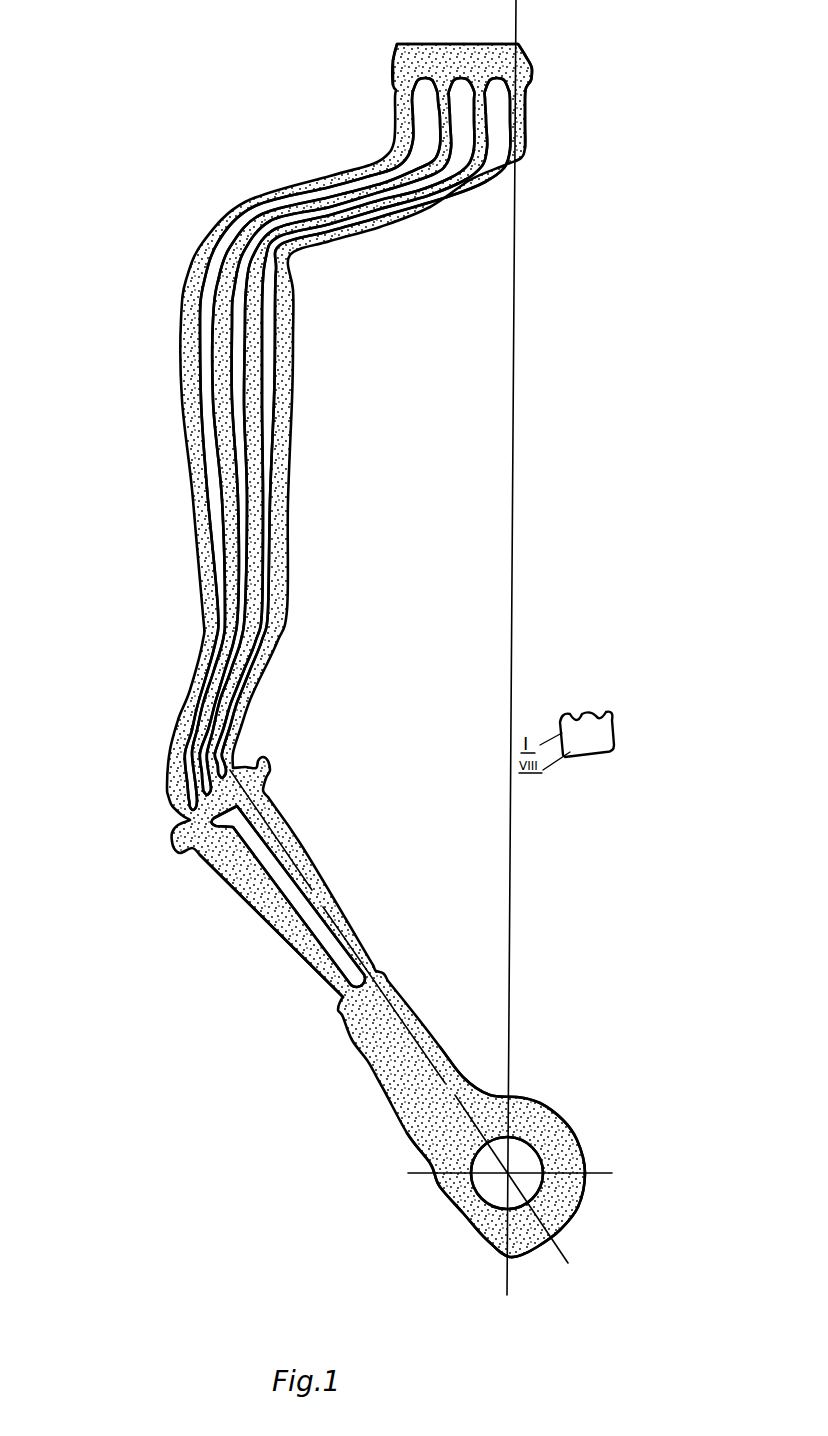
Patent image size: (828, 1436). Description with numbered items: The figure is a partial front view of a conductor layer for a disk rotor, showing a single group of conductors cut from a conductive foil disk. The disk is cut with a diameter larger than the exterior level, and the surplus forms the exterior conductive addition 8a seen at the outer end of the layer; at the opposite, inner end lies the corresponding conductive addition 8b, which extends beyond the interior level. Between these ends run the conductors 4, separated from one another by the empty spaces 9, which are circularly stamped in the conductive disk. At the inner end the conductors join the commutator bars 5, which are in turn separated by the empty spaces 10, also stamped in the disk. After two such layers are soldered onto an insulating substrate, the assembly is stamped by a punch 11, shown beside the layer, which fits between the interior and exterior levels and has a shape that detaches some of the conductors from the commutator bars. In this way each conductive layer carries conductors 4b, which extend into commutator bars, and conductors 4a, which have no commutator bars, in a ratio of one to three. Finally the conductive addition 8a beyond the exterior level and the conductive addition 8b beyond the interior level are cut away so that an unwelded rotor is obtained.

The conductors 4 is at (283, 475).
The conductors without commutator bars 4a is at (250, 427).
The conductors with commutator bars 4b is at (212, 538).
The commutator bars 5 is at (310, 917).
The exterior conductive addition 8a is at (478, 58).
The interior conductive addition 8b is at (413, 997).
The empty spaces between the conductors 9 is at (273, 375).
The empty spaces between the commutator bars 10 is at (333, 953).
The punch 11 is at (598, 733).